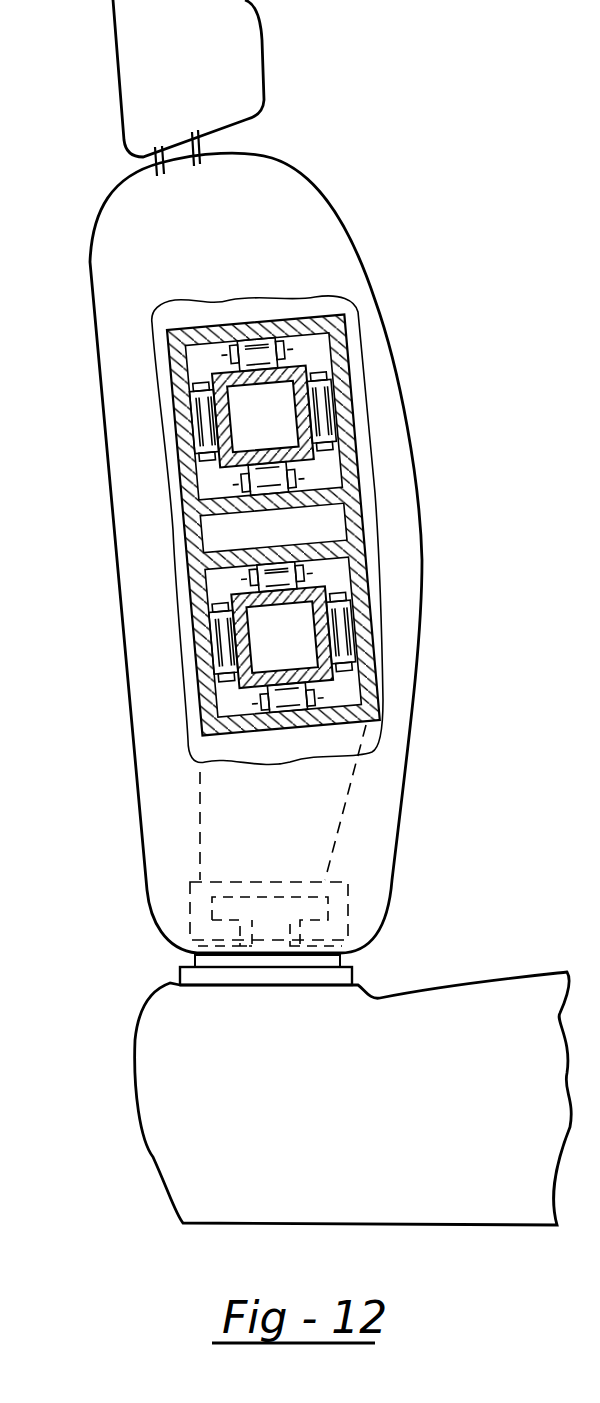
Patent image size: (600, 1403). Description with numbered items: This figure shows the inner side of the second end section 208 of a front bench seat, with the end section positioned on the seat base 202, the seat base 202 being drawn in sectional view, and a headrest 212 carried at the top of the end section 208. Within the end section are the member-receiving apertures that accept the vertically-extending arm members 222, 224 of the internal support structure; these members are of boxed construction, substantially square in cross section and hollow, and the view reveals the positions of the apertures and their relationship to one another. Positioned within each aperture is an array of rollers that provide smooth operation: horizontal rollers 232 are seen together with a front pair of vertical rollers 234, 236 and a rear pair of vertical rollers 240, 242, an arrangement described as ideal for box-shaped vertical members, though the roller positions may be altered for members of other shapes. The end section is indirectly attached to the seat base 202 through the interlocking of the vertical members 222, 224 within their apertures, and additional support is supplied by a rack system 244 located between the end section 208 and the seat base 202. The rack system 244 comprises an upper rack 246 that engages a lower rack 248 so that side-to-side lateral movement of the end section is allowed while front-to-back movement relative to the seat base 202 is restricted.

The seat base 202 is at (477, 1088).
The second end section 208 is at (330, 232).
The headrest 212 is at (248, 66).
The vertically-extending arm member 222 is at (302, 410).
The vertically-extending arm member 224 is at (327, 627).
The horizontal rollers 232 is at (255, 340).
The front vertical roller 234 is at (193, 418).
The front vertical roller 236 is at (217, 645).
The rear vertical roller 240 is at (327, 422).
The rear vertical roller 242 is at (343, 648).
The rack system 244 is at (190, 908).
The upper rack 246 is at (350, 903).
The lower rack 248 is at (252, 960).